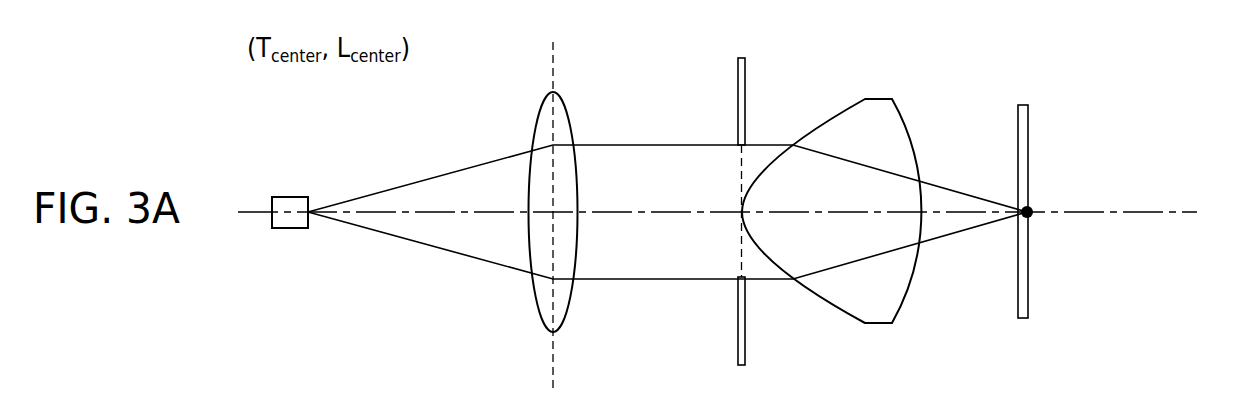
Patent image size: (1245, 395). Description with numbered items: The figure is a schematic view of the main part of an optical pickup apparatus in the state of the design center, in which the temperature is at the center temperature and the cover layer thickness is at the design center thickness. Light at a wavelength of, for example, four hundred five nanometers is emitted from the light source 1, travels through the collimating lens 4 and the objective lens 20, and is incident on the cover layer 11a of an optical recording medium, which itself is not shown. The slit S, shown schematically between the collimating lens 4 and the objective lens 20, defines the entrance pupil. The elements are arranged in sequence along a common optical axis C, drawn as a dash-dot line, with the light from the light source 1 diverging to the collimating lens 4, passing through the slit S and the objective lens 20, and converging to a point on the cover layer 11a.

The light source 1 is at (298, 200).
The collimating lens 4 is at (542, 112).
The slit S is at (747, 325).
The objective lens 20 is at (877, 108).
The cover layer 11a is at (1023, 104).
The optical axis C is at (1168, 214).